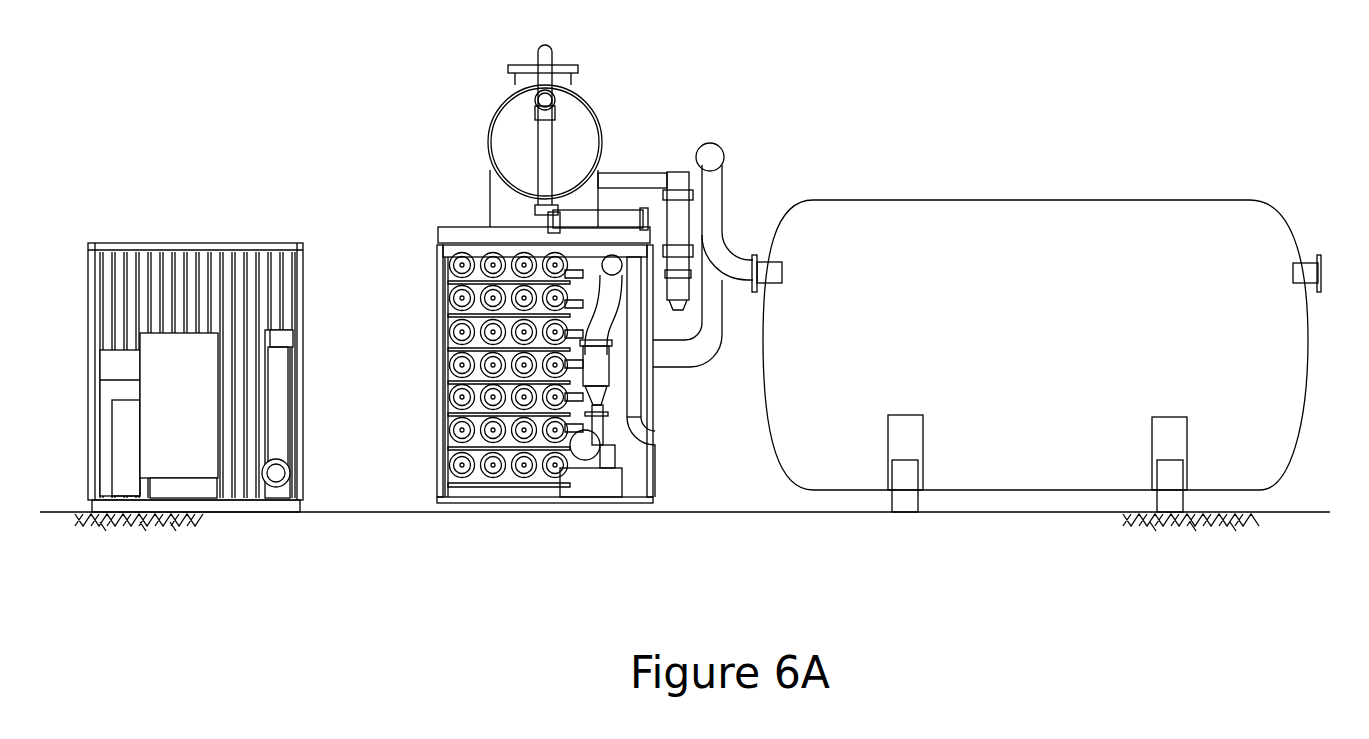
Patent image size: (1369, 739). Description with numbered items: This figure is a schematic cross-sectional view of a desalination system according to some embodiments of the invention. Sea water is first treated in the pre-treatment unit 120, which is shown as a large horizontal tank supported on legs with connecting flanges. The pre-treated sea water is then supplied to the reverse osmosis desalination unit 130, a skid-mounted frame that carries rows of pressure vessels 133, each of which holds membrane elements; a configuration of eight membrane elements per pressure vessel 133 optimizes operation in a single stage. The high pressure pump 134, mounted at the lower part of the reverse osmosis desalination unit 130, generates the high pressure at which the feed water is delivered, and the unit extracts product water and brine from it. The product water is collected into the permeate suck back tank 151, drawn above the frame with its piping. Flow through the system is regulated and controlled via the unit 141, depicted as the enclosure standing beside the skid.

The pre-treatment unit 120 is at (1160, 200).
The reverse osmosis desalination unit 130 is at (445, 283).
The pressure vessel 133 is at (455, 332).
The high pressure pump 134 is at (612, 478).
The flow regulation and control unit 141 is at (182, 247).
The permeate suck back tank 151 is at (580, 93).